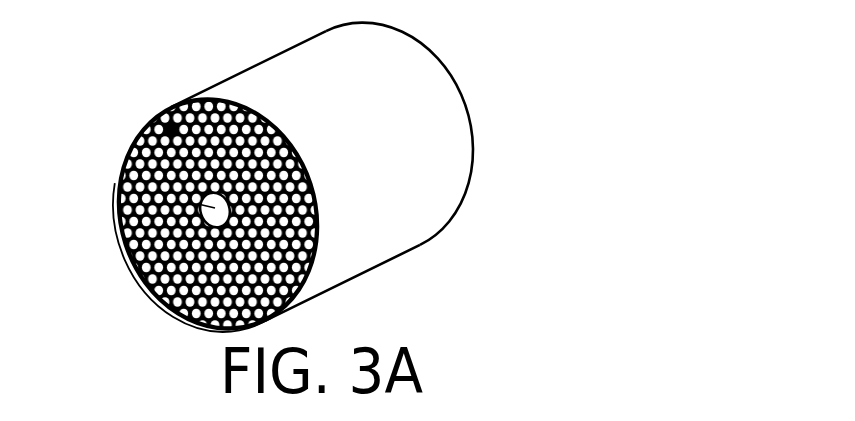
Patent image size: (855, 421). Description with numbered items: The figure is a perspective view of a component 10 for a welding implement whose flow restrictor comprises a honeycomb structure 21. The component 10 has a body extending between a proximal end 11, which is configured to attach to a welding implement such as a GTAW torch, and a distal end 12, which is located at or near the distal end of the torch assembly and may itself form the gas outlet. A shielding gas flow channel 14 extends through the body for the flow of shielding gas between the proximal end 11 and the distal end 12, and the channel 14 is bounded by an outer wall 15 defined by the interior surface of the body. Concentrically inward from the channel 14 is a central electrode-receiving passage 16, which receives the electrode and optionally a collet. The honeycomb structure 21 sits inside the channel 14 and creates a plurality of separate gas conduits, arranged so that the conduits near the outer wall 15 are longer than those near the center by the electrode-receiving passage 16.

The component 10 is at (273, 178).
The proximal end 11 is at (413, 42).
The distal end 12 is at (132, 218).
The shielding gas flow channel 14 is at (172, 127).
The outer wall 15 is at (362, 208).
The central electrode-receiving passage 16 is at (133, 162).
The honeycomb structure 21 is at (305, 275).